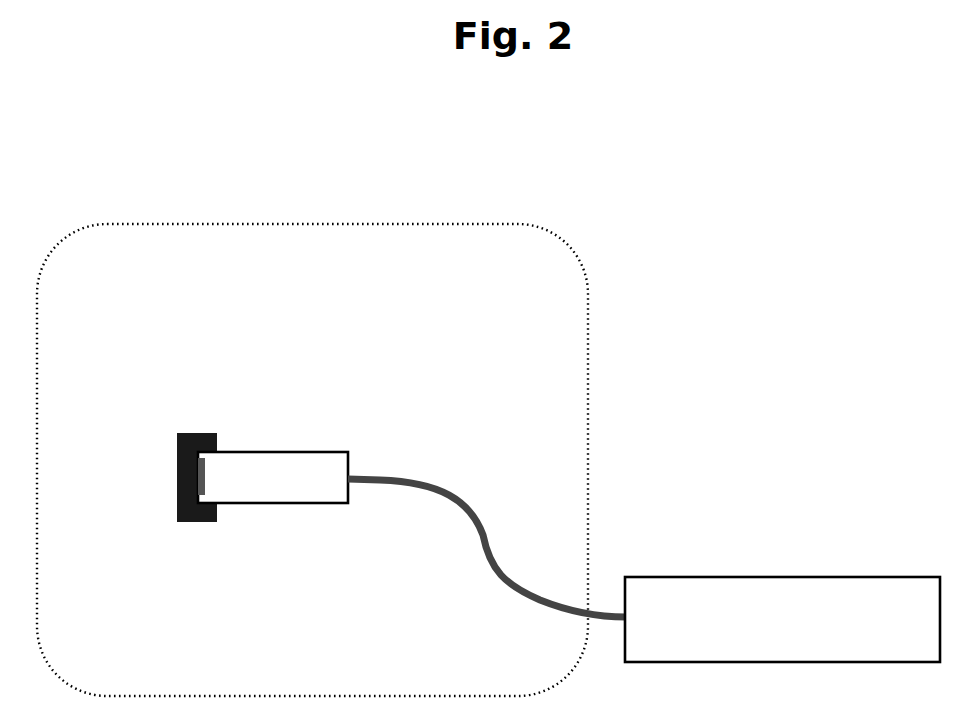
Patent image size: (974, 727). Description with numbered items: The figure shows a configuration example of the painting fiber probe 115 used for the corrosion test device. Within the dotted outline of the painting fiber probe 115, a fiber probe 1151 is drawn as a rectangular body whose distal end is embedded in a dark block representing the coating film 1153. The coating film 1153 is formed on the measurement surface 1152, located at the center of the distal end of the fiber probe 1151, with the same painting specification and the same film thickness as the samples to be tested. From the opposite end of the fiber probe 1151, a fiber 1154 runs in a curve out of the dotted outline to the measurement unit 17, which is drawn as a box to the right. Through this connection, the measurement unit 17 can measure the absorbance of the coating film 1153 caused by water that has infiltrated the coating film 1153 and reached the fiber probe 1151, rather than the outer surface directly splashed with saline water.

The painting fiber probe 115 is at (181, 224).
The fiber probe 1151 is at (338, 441).
The measurement surface 1152 is at (270, 388).
The coating film 1153 is at (200, 537).
The fiber 1154 is at (429, 482).
The measurement unit 17 is at (783, 577).